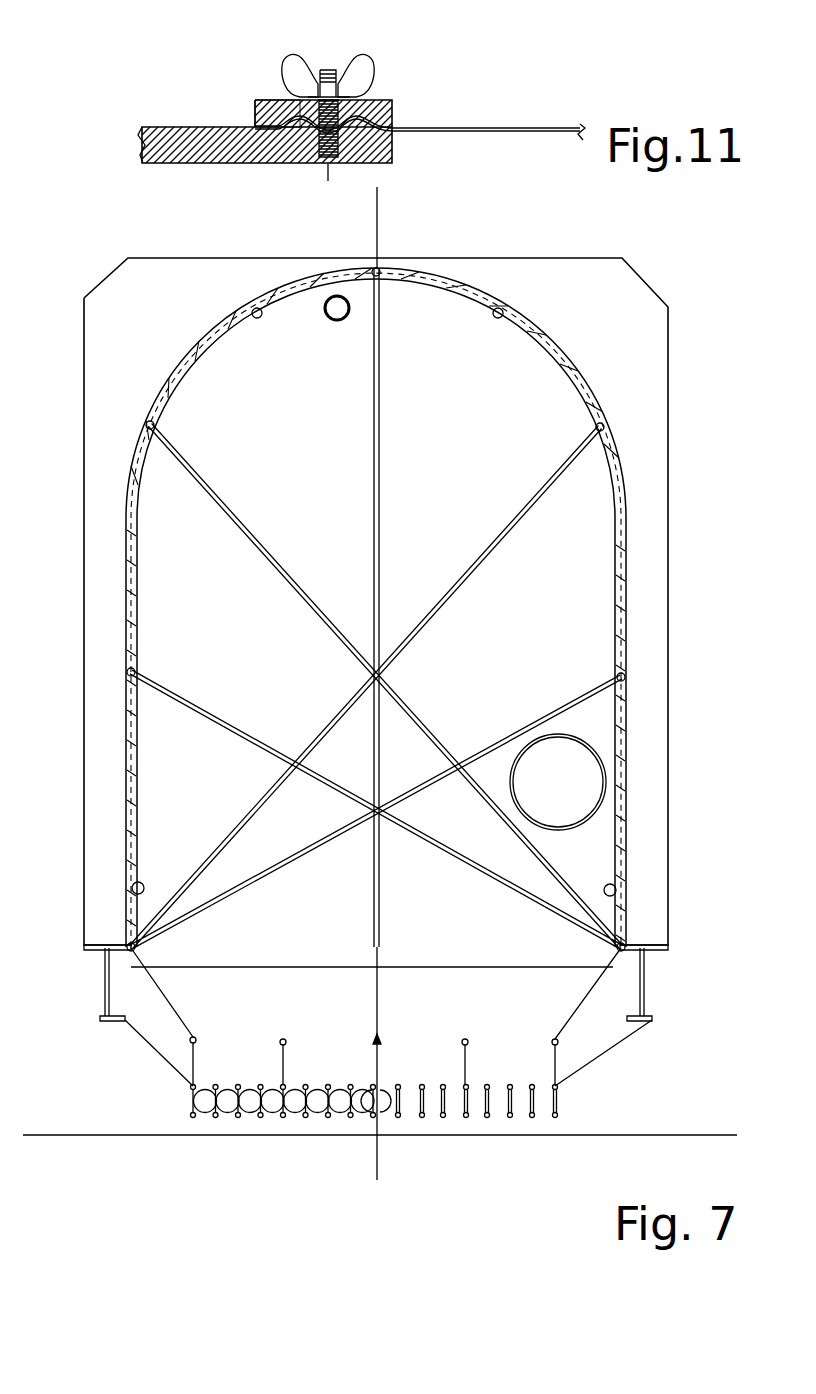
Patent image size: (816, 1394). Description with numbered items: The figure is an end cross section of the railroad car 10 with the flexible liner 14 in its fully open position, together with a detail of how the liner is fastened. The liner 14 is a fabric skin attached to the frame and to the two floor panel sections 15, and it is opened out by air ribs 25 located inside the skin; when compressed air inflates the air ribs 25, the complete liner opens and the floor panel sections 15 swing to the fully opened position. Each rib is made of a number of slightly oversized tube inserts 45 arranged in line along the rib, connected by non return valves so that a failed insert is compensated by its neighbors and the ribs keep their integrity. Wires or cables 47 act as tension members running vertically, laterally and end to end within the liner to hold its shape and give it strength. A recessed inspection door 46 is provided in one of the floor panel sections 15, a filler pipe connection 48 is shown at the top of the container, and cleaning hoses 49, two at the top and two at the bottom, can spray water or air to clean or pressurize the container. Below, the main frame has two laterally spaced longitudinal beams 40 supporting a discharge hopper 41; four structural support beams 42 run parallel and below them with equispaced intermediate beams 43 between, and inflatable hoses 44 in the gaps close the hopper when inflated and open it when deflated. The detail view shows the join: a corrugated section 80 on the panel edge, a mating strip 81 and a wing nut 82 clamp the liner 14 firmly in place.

In FIG. 7, the railroad car 10 is at (478, 242).
In FIG. 11, the liner 14 is at (460, 128).
In FIG. 7, the liner 14 is at (630, 465).
In FIG. 11, the floor panel sections 15 is at (218, 152).
In FIG. 7, the floor panel sections 15 is at (637, 288).
In FIG. 7, the air ribs 25 is at (160, 388).
In FIG. 7, the longitudinal beams 40 is at (105, 970).
In FIG. 7, the discharge hopper 41 is at (455, 1105).
In FIG. 7, the structural support beams 42 is at (193, 1058).
In FIG. 7, the intermediate beams 43 is at (378, 1103).
In FIG. 7, the inflatable hoses 44 is at (253, 1105).
In FIG. 7, the tube inserts 45 is at (185, 372).
In FIG. 7, the recessed inspection door 46 is at (547, 757).
In FIG. 7, the cables 47 is at (378, 268).
In FIG. 7, the filler pipe connection 48 is at (337, 321).
In FIG. 7, the cleaning hoses 49 is at (257, 319).
In FIG. 11, the corrugated section 80 is at (392, 103).
In FIG. 11, the mating strip 81 is at (283, 110).
In FIG. 11, the wing nut 82 is at (306, 54).